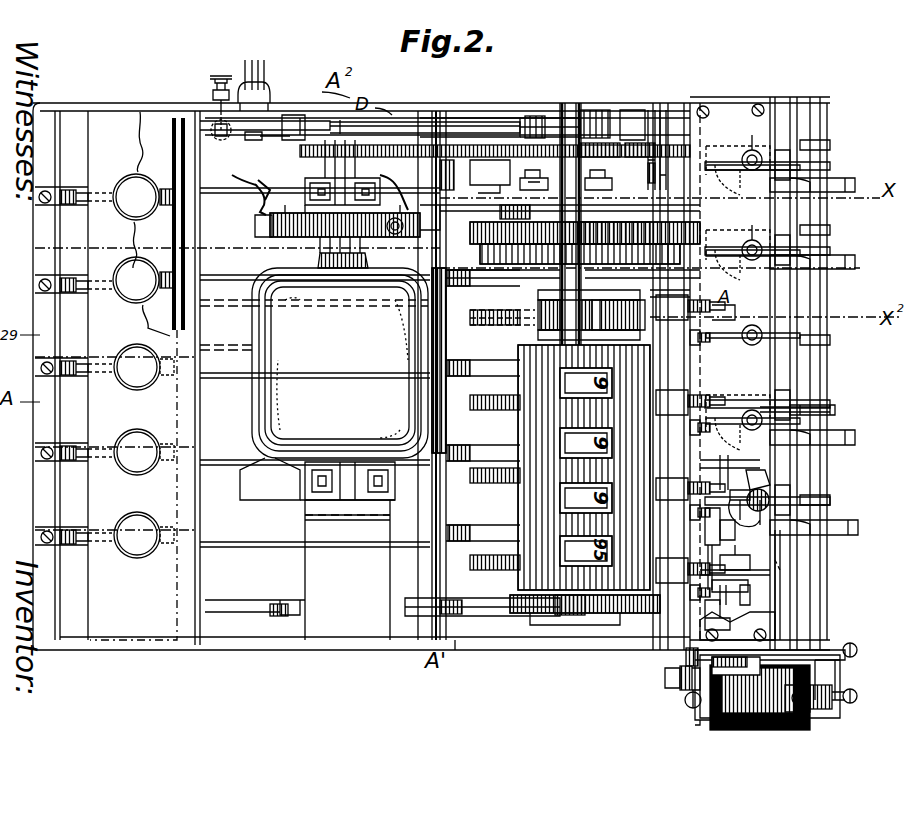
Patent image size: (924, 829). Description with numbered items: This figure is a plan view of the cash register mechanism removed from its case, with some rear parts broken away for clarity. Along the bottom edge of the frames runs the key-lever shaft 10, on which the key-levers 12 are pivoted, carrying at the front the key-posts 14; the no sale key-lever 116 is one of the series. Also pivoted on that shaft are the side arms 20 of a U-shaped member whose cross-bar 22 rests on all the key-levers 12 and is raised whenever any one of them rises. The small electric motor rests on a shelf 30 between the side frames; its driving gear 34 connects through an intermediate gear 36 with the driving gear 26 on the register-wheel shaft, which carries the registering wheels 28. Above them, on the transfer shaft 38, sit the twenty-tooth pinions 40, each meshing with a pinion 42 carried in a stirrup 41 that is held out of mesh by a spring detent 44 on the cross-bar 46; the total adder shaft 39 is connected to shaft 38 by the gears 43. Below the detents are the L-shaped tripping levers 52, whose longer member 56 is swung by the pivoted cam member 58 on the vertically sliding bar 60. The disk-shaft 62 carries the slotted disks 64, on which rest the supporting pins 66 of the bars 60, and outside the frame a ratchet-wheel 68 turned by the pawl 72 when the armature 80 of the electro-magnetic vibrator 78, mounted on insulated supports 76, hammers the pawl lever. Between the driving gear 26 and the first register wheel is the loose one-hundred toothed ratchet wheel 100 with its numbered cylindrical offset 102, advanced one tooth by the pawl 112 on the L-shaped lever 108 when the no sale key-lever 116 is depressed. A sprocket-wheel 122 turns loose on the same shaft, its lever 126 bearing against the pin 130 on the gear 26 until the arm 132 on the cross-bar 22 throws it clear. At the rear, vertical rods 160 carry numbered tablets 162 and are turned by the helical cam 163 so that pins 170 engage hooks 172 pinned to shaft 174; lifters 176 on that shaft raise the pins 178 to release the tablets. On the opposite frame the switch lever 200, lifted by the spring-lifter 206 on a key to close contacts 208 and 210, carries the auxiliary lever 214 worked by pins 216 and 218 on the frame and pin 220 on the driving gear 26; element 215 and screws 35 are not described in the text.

The key-lever shaft 10 is at (430, 500).
The key-levers 12 is at (388, 371).
The key-posts 14 is at (143, 361).
The side arms 20 is at (560, 100).
The cross-bar 22 is at (690, 130).
The driving gear 26 is at (590, 110).
The registering wheels 28 is at (483, 420).
The shelf 30 is at (347, 570).
The driving gear 34 is at (320, 172).
The screws 35 is at (54, 531).
The intermediate gear 36 is at (452, 174).
The shaft 38 is at (580, 268).
The total adder shaft 39 is at (560, 300).
The twenty-tooth pinions 40 is at (540, 315).
The stirrup 41 is at (589, 310).
The twenty-tooth pinion 42 is at (630, 295).
The gears 43 is at (500, 606).
The spring detent 44 is at (690, 439).
The cross-bar 46 is at (672, 290).
The tripping levers 52 is at (689, 465).
The longer member 56 is at (780, 560).
The pivoted cam member 58 is at (750, 562).
The vertically sliding bar 60 is at (750, 586).
The disk-shaft 62 is at (737, 626).
The slotted disks 64 is at (735, 567).
The supporting pins 66 is at (716, 571).
The ratchet-wheel 68 is at (676, 695).
The pawl 72 is at (672, 668).
The supports 76 is at (770, 686).
The electro-magnetic vibrator 78 is at (786, 730).
The vibrating armature 80 is at (826, 710).
The one-hundred toothed ratchet wheel 100 is at (480, 230).
The cylindrical offset 102 is at (484, 264).
The L-shaped lever 108 is at (615, 228).
The pawl 112 is at (570, 209).
The no sale key-lever 116 is at (262, 200).
The sprocket-wheel 122 is at (548, 166).
The lever 126 is at (630, 140).
The pin 130 is at (652, 160).
The arm 132 is at (663, 160).
The vertical rods 160 is at (760, 488).
The numbered tablets 162 is at (716, 165).
The quarter-turn helical cam 163 is at (755, 530).
The pins 170 is at (735, 477).
The hooks 172 is at (830, 143).
The shaft 174 is at (830, 105).
The lifters 176 is at (840, 538).
The pin 178 is at (830, 166).
The lever 200 is at (212, 620).
The spring-lifter 206 is at (190, 183).
The contact point 208 is at (170, 104).
The contact point 210 is at (214, 108).
The auxiliary lever 214 is at (470, 120).
The pinion 215 is at (600, 140).
The pin 216 is at (485, 140).
The pin 218 is at (535, 118).
The pin 220 is at (490, 176).